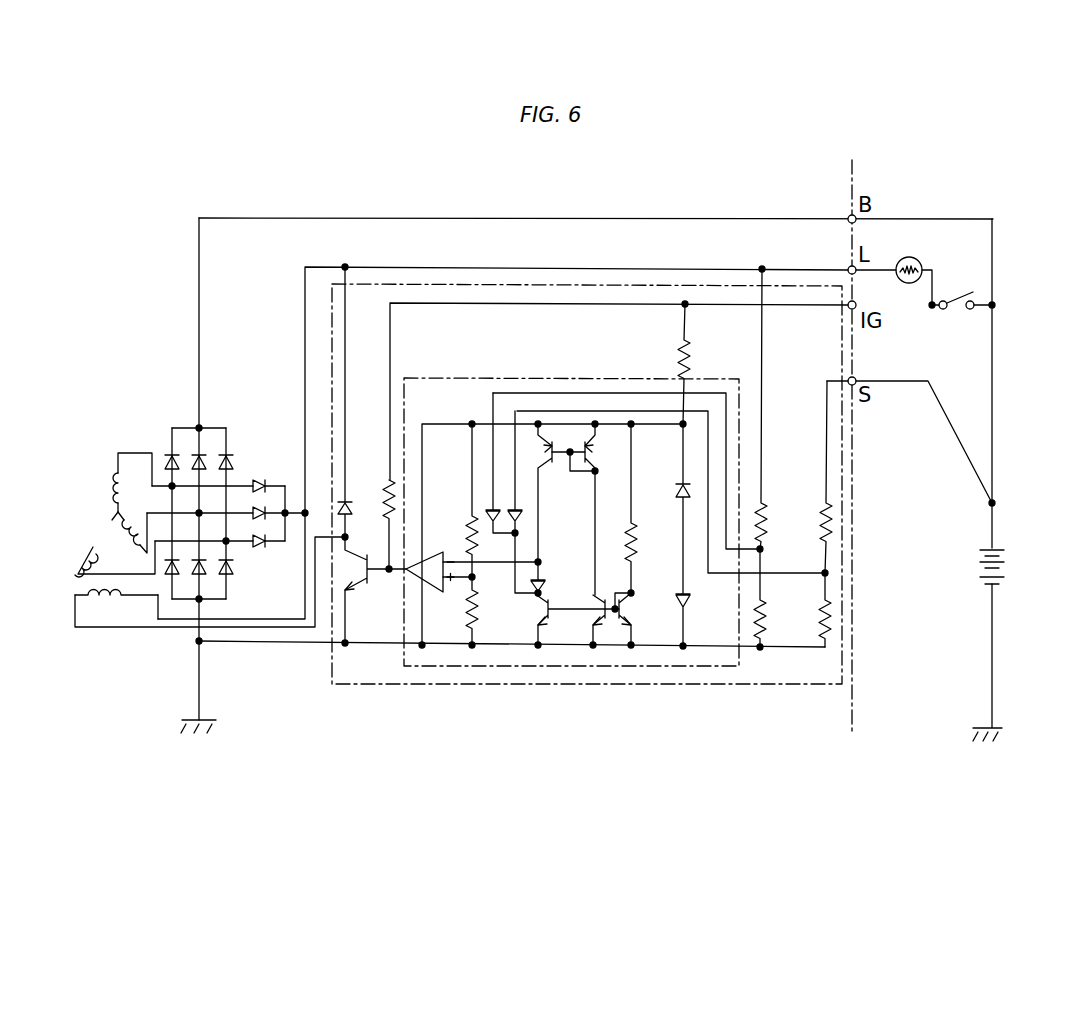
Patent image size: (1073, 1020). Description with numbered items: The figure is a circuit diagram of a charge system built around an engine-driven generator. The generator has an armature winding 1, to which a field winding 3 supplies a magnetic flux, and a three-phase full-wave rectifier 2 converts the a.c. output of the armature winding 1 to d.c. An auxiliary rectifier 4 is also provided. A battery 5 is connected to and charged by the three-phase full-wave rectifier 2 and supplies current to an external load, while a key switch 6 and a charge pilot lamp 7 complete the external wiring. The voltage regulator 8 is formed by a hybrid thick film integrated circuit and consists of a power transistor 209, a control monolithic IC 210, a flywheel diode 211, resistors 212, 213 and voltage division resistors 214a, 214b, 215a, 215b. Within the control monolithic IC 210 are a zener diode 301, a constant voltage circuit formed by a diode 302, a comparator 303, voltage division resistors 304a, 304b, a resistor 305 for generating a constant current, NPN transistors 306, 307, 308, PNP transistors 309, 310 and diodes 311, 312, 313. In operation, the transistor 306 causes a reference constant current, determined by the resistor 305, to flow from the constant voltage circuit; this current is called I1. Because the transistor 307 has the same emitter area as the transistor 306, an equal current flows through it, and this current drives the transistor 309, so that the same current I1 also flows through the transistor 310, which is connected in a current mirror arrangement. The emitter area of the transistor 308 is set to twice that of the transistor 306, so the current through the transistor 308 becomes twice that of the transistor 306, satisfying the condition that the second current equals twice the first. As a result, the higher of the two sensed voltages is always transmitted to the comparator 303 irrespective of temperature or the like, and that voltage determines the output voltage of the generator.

The armature winding 1 is at (110, 506).
The three-phase full-wave rectifier 2 is at (190, 424).
The field winding 3 is at (118, 605).
The auxiliary rectifier 4 is at (276, 480).
The battery 5 is at (978, 565).
The key switch 6 is at (957, 312).
The charge pilot lamp 7 is at (918, 258).
The voltage regulator 8 is at (482, 688).
The power transistor 209 is at (360, 588).
The control monolithic IC 210 is at (605, 668).
The flywheel diode 211 is at (349, 510).
The resistor 212 is at (386, 482).
The resistor 213 is at (690, 348).
The voltage division resistor 214a is at (830, 503).
The voltage division resistor 214b is at (830, 610).
The voltage division resistor 215a is at (782, 498).
The voltage division resistor 215b is at (760, 605).
The zener diode 301 is at (678, 493).
The diode 302 is at (688, 592).
The comparator 303 is at (432, 565).
The voltage division resistor 304a is at (468, 514).
The voltage division resistor 304b is at (500, 612).
The resistor 305 is at (626, 532).
The NPN transistor 306 is at (650, 610).
The NPN transistor 307 is at (600, 612).
The NPN transistor 308 is at (545, 612).
The PNP transistor 309 is at (598, 449).
The PNP transistor 310 is at (548, 440).
The diode 311 is at (527, 515).
The diode 312 is at (480, 522).
The diode 313 is at (545, 585).